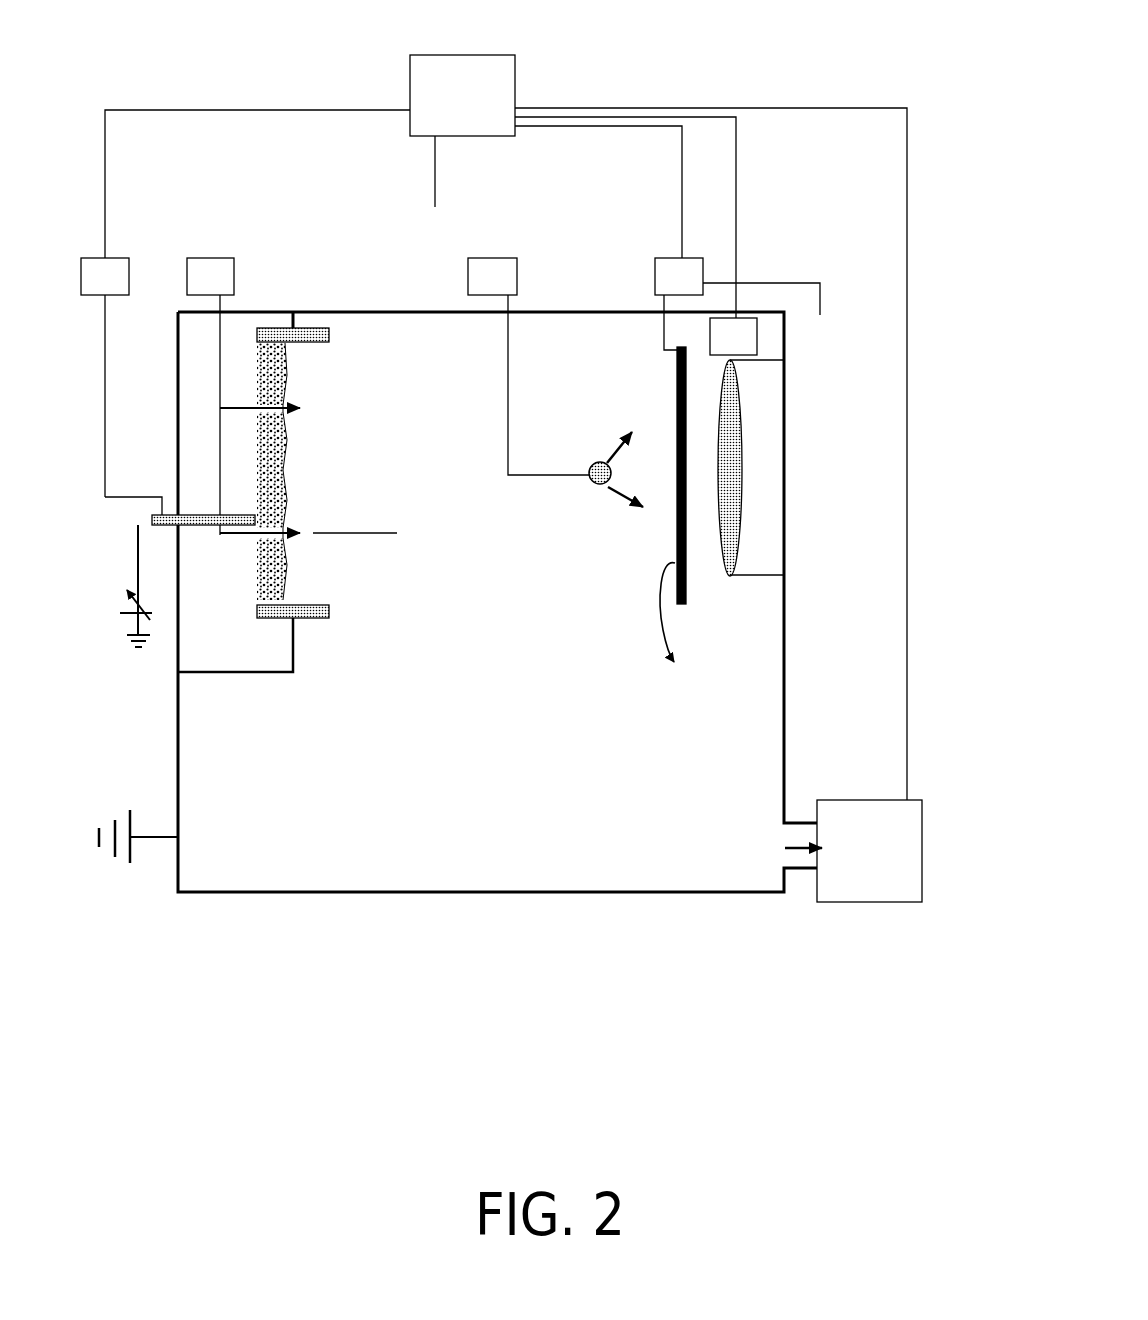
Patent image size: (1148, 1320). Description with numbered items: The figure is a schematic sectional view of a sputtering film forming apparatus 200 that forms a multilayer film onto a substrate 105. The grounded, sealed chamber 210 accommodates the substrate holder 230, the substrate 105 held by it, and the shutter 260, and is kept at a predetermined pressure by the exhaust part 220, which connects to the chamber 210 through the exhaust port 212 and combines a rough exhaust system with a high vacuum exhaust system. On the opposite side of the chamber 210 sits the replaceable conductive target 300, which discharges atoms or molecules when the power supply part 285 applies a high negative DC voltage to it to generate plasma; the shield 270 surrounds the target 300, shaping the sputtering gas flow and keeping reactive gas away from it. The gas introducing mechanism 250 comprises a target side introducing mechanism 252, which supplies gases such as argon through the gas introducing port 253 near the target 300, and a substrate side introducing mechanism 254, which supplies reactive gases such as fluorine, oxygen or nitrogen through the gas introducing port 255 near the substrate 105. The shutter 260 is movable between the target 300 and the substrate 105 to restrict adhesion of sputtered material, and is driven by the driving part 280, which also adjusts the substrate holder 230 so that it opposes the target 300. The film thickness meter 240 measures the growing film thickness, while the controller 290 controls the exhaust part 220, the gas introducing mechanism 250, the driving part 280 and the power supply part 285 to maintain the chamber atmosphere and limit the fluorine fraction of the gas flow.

The film forming apparatus 200 is at (303, 39).
The controller 290 is at (462, 95).
The power supply part 285 is at (105, 276).
The gas introducing mechanism 250 is at (234, 256).
The target side introducing mechanism 252 is at (210, 276).
The substrate side introducing mechanism 254 is at (492, 276).
The driving part 280 is at (679, 276).
The film thickness meter 240 is at (733, 336).
The substrate holder 230 is at (778, 380).
The substrate 105 is at (731, 577).
The shutter 260 is at (676, 533).
The gas introducing port 255 is at (620, 492).
The gas introducing port 253 is at (293, 410).
The target 300 is at (283, 378).
The shield 270 is at (320, 612).
The chamber 210 is at (178, 785).
The exhaust port 212 is at (802, 840).
The exhaust part 220 is at (869, 851).